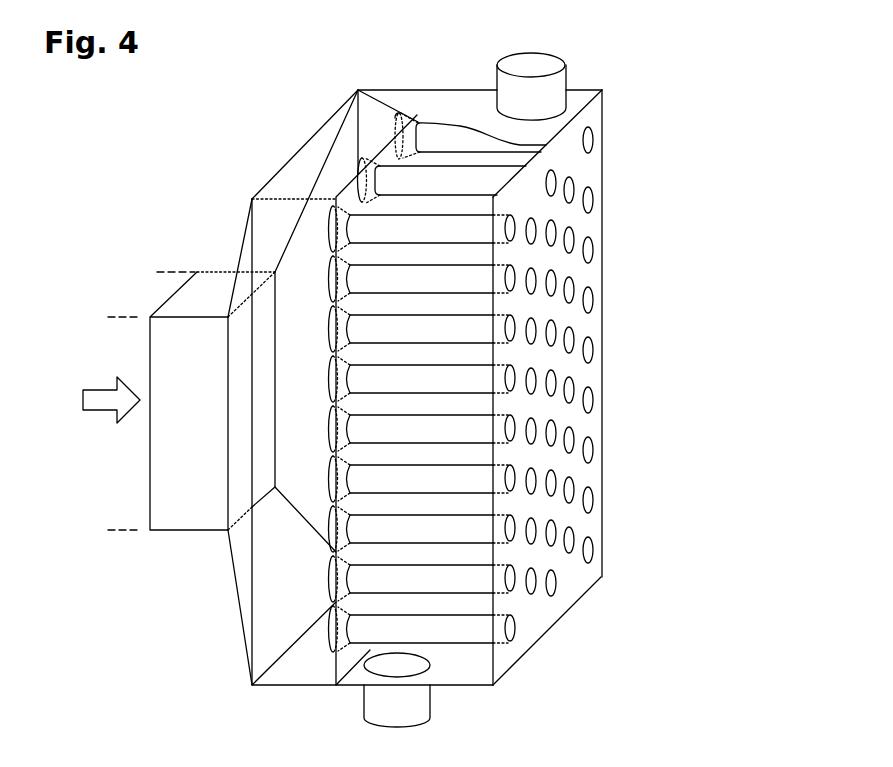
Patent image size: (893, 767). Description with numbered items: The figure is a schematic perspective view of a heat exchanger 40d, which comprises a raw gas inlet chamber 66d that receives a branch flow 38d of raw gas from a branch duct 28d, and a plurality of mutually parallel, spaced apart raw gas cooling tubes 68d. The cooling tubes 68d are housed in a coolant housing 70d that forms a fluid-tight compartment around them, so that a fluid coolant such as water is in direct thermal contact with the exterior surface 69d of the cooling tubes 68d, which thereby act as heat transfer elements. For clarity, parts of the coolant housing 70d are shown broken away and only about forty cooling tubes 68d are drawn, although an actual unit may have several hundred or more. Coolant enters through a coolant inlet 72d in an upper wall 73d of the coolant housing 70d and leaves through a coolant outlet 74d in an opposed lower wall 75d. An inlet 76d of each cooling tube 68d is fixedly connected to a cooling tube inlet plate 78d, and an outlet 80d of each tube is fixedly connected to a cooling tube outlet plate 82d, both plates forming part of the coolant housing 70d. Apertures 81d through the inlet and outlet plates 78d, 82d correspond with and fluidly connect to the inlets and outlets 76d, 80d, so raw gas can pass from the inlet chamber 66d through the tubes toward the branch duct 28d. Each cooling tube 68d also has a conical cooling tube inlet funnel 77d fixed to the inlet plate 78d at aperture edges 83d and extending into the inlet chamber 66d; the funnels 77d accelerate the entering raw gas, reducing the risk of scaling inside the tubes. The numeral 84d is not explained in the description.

The branch duct 28d is at (180, 304).
The branch flow 38d is at (107, 398).
The heat exchanger 40d is at (781, 65).
The raw gas inlet chamber 66d is at (296, 305).
The raw gas cooling tubes 68d is at (463, 633).
The exterior surface 69d is at (480, 613).
The coolant housing 70d is at (431, 92).
The coolant inlet 72d is at (540, 62).
The upper wall 73d is at (463, 102).
The coolant outlet 74d is at (372, 705).
The lower wall 75d is at (450, 677).
The inlet 76d is at (277, 300).
The cooling tube inlet funnel 77d is at (330, 432).
The cooling tube inlet plate 78d is at (372, 150).
The outlet 80d is at (594, 198).
The apertures 81d is at (588, 345).
The cooling tube outlet plate 82d is at (596, 277).
The aperture edges 83d is at (357, 222).
The housing 84d is at (670, 452).